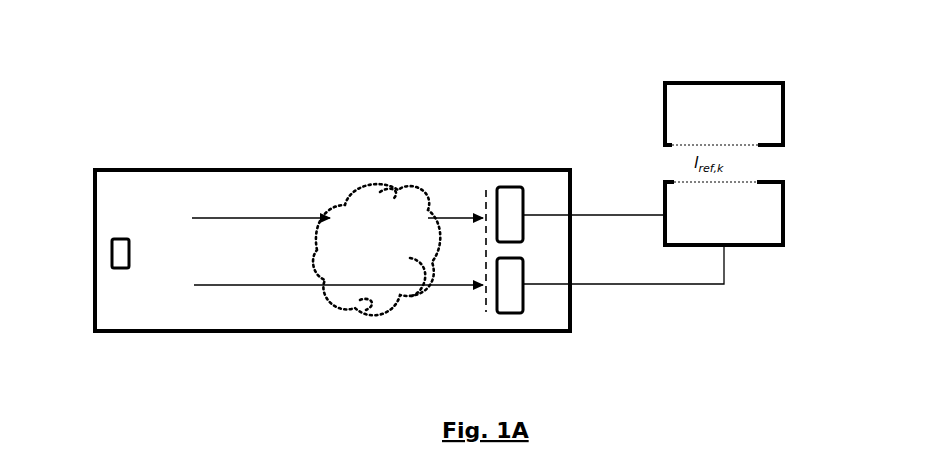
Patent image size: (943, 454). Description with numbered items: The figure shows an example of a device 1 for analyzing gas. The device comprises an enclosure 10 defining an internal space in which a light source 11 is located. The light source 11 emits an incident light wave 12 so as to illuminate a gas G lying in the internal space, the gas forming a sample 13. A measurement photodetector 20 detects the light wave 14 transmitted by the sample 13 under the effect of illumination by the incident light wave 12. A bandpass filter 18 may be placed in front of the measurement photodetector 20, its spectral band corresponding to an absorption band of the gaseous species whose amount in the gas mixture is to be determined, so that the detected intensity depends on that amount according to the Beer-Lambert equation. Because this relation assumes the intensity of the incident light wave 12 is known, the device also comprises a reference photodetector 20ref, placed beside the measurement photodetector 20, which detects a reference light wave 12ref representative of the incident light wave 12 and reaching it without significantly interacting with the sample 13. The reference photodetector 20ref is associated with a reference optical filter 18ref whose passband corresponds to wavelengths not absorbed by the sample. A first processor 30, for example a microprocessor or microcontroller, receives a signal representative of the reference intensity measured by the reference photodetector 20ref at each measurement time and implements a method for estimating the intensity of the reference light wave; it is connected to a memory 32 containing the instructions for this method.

The device for analyzing gas 1 is at (148, 144).
The enclosure 10 is at (325, 334).
The light source 11 is at (120, 281).
The incident light wave 12 is at (309, 213).
The reference light wave 12ref is at (215, 291).
The sample 13 is at (395, 190).
The gas G is at (364, 210).
The transmitted light wave 14 is at (445, 212).
The bandpass filter 18 is at (482, 181).
The reference optical filter 18ref is at (489, 314).
The measurement photodetector 20 is at (509, 184).
The reference photodetector 20ref is at (514, 296).
The first processor 30 is at (714, 217).
The memory 32 is at (718, 107).